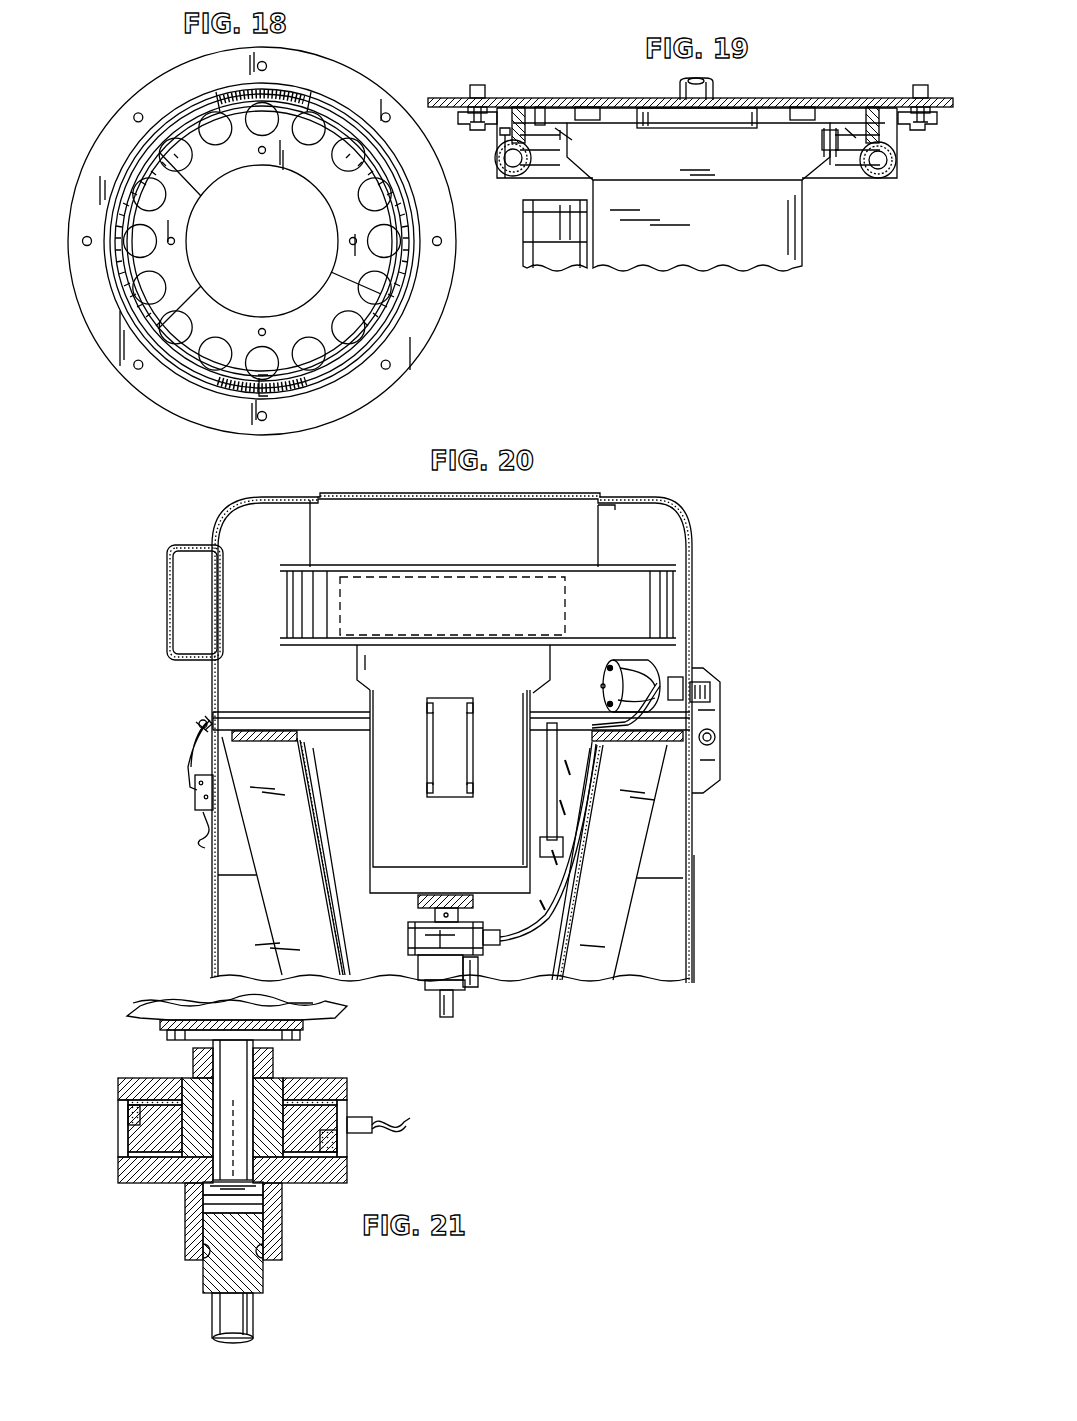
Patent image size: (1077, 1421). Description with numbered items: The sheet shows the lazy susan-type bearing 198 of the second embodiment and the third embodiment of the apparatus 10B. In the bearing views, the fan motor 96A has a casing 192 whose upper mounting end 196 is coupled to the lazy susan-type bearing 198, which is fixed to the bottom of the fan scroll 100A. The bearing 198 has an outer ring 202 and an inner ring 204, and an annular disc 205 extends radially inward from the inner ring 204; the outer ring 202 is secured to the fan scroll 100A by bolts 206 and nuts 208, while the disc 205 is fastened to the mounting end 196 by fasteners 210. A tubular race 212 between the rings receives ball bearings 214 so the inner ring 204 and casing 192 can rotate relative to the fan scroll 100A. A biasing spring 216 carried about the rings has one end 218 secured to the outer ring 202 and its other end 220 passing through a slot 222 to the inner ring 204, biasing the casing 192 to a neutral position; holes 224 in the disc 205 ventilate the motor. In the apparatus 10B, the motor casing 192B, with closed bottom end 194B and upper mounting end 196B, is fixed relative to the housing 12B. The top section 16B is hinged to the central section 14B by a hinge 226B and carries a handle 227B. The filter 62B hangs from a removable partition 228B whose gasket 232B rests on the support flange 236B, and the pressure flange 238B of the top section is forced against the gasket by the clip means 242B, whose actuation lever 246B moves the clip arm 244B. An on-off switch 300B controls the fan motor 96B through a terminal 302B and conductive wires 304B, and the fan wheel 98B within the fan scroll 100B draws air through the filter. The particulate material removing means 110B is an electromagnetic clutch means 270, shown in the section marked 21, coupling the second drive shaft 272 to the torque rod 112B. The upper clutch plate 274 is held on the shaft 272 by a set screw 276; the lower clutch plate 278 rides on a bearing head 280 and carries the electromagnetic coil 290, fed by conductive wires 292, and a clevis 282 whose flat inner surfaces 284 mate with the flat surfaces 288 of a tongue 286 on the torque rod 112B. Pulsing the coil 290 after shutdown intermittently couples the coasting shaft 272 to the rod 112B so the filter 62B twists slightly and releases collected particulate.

In FIG. 18, the lazy susan-type bearing 198 is at (130, 406).
In FIG. 19, the lazy susan-type bearing 198 is at (704, 181).
In FIG. 18, the outer ring 202 is at (128, 328).
In FIG. 19, the outer ring 202 is at (513, 176).
In FIG. 18, the inner ring 204 is at (262, 241).
In FIG. 19, the inner ring 204 is at (850, 178).
In FIG. 18, the annular disc 205 is at (333, 194).
In FIG. 19, the annular disc 205 is at (600, 125).
In FIG. 19, the bolts 206 is at (477, 118).
In FIG. 19, the nuts 208 is at (470, 90).
In FIG. 19, the fasteners 210 is at (583, 108).
In FIG. 18, the tubular race 212 is at (125, 175).
In FIG. 19, the tubular race 212 is at (500, 160).
In FIG. 18, the ball bearings 214 is at (406, 286).
In FIG. 19, the ball bearings 214 is at (500, 170).
In FIG. 18, the biasing spring 216 is at (219, 396).
In FIG. 18, the end of spring 218 is at (262, 237).
In FIG. 19, the end of spring 218 is at (540, 107).
In FIG. 18, the other end of spring 220 is at (260, 385).
In FIG. 19, the other end of spring 220 is at (822, 140).
In FIG. 18, the slot 222 is at (304, 399).
In FIG. 19, the slot 222 is at (896, 168).
In FIG. 18, the holes 224 is at (345, 272).
In FIG. 19, the holes 224 is at (572, 140).
In FIG. 19, the upper mounting end 196 is at (740, 160).
In FIG. 19, the casing 192 is at (760, 267).
In FIG. 19, the fan motor 96A is at (713, 270).
In FIG. 19, the fan scroll 100A is at (825, 100).
In FIG. 20, the apparatus 10B is at (757, 544).
In FIG. 20, the housing 12B is at (693, 910).
In FIG. 20, the central section 14B is at (693, 957).
In FIG. 20, the top section 16B is at (227, 515).
In FIG. 20, the filter 62B is at (600, 970).
In FIG. 20, the fan motor 96B is at (385, 787).
In FIG. 21, the fan motor 96B is at (223, 994).
In FIG. 20, the fan wheel 98B is at (373, 587).
In FIG. 20, the fan scroll 100B is at (472, 556).
In FIG. 20, the particulate material removing means 110B is at (510, 1003).
In FIG. 21, the particulate material removing means 110B is at (173, 1313).
In FIG. 20, the torque rod 112B is at (440, 1020).
In FIG. 21, the torque rod 112B is at (253, 1327).
In FIG. 20, the motor casing 192B is at (382, 700).
In FIG. 21, the motor casing 192B is at (160, 1022).
In FIG. 20, the closed bottom end 194B is at (407, 877).
In FIG. 21, the closed bottom end 194B is at (320, 1023).
In FIG. 20, the upper mounting end 196B is at (497, 690).
In FIG. 20, the hinge 226B is at (720, 735).
In FIG. 20, the handle 227B is at (167, 626).
In FIG. 20, the removable partition 228B is at (262, 718).
In FIG. 20, the gasket 232B is at (199, 724).
In FIG. 20, the support flange 236B is at (200, 730).
In FIG. 20, the pressure flange 238B is at (205, 718).
In FIG. 20, the clip means 242B is at (195, 816).
In FIG. 20, the clip arm 244B is at (188, 762).
In FIG. 20, the actuation lever 246B is at (200, 852).
In FIG. 20, the electromagnetic clutch means 270 is at (407, 957).
In FIG. 21, the electromagnetic clutch means 270 is at (238, 1192).
In FIG. 21, the second drive shaft 272 is at (223, 1060).
In FIG. 20, the upper clutch plate 274 is at (413, 930).
In FIG. 21, the upper clutch plate 274 is at (118, 1087).
In FIG. 21, the set screw 276 is at (273, 1060).
In FIG. 20, the lower clutch plate 278 is at (412, 955).
In FIG. 21, the lower clutch plate 278 is at (347, 1172).
In FIG. 21, the bearing head 280 is at (203, 1190).
In FIG. 20, the clevis 282 is at (485, 967).
In FIG. 21, the clevis 282 is at (183, 1233).
In FIG. 21, the flat inner surfaces 284 is at (207, 1262).
In FIG. 20, the tongue 286 is at (460, 993).
In FIG. 21, the tongue 286 is at (247, 1237).
In FIG. 21, the flat surfaces 288 is at (207, 1220).
In FIG. 20, the electromagnetic coil 290 is at (410, 940).
In FIG. 21, the electromagnetic coil 290 is at (120, 1142).
In FIG. 20, the conductive wires 292 is at (580, 815).
In FIG. 21, the conductive wires 292 is at (410, 1130).
In FIG. 20, the on-off switch 300B is at (713, 689).
In FIG. 20, the terminal 302B is at (657, 665).
In FIG. 20, the conductive wires 304B is at (547, 814).
In FIG. 20, the section line 21 is at (450, 895).